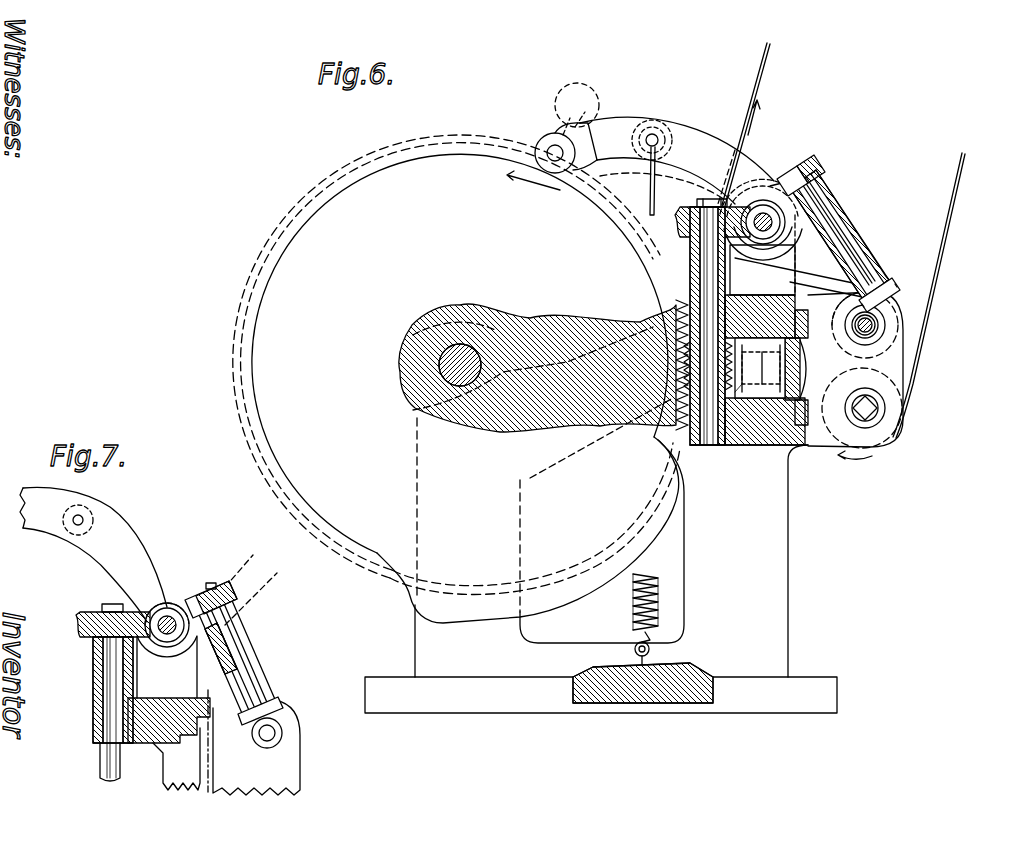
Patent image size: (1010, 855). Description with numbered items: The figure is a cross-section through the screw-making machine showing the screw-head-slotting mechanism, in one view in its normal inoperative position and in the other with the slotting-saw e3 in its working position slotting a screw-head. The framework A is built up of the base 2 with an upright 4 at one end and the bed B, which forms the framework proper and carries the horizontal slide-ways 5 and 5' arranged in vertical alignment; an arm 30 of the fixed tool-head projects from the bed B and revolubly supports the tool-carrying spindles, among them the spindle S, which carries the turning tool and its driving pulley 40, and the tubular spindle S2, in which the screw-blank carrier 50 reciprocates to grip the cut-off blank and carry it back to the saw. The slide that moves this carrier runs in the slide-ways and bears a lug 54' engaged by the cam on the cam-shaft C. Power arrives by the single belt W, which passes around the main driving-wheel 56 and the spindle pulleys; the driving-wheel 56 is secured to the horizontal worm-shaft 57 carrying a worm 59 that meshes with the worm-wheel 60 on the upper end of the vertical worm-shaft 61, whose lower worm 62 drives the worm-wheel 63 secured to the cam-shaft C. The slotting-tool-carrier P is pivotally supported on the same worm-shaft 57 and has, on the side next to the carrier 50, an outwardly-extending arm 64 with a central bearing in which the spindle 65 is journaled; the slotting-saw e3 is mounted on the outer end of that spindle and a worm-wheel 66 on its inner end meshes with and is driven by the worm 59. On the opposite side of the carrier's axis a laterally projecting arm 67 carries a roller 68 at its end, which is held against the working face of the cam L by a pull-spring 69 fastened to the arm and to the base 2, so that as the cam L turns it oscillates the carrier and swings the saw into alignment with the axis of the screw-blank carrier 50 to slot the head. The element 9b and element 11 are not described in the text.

In FIG. 6, the base 2 is at (505, 678).
In FIG. 6, the upright 4 is at (718, 580).
In FIG. 6, the slide-way 5 is at (810, 319).
In FIG. 6, the slide-way 5' is at (811, 418).
In FIG. 6, the washer 9b is at (858, 333).
In FIG. 6, the stud 11 is at (880, 325).
In FIG. 6, the arm of fixed tool-head 30 is at (840, 448).
In FIG. 7, the arm of fixed tool-head 30 is at (298, 772).
In FIG. 6, the driving pulley 40 is at (880, 447).
In FIG. 6, the screw-blank carrier 50 is at (865, 338).
In FIG. 6, the lug 54' is at (745, 425).
In FIG. 6, the main driving-wheel 56 is at (796, 269).
In FIG. 6, the worm-shaft 57 is at (762, 204).
In FIG. 7, the worm-shaft 57 is at (163, 607).
In FIG. 6, the worm 59 is at (766, 236).
In FIG. 7, the worm 59 is at (176, 612).
In FIG. 6, the worm-wheel 60 is at (680, 234).
In FIG. 7, the worm-wheel 60 is at (82, 614).
In FIG. 6, the worm-shaft 61 is at (708, 446).
In FIG. 7, the worm-shaft 61 is at (93, 682).
In FIG. 6, the worm 62 is at (601, 438).
In FIG. 6, the worm-wheel 63 is at (558, 335).
In FIG. 6, the arm 64 is at (873, 248).
In FIG. 7, the arm 64 is at (245, 642).
In FIG. 6, the spindle 65 is at (838, 222).
In FIG. 6, the worm-wheel 66 is at (818, 173).
In FIG. 7, the worm-wheel 66 is at (238, 604).
In FIG. 6, the arm 67 is at (672, 130).
In FIG. 7, the arm 67 is at (115, 523).
In FIG. 6, the roller 68 is at (548, 138).
In FIG. 6, the pull-spring 69 is at (655, 196).
In FIG. 6, the framework A is at (602, 541).
In FIG. 6, the bed B is at (778, 447).
In FIG. 6, the cam-shaft C is at (466, 344).
In FIG. 6, the cam L is at (470, 170).
In FIG. 6, the slotting-tool-carrier P is at (839, 234).
In FIG. 7, the slotting-tool-carrier P is at (238, 636).
In FIG. 6, the tool-carrying spindle S is at (870, 398).
In FIG. 6, the tool-carrying spindle S2 is at (846, 330).
In FIG. 6, the belt W is at (945, 208).
In FIG. 6, the slotting-saw e3 is at (890, 284).
In FIG. 7, the slotting-saw e3 is at (255, 740).